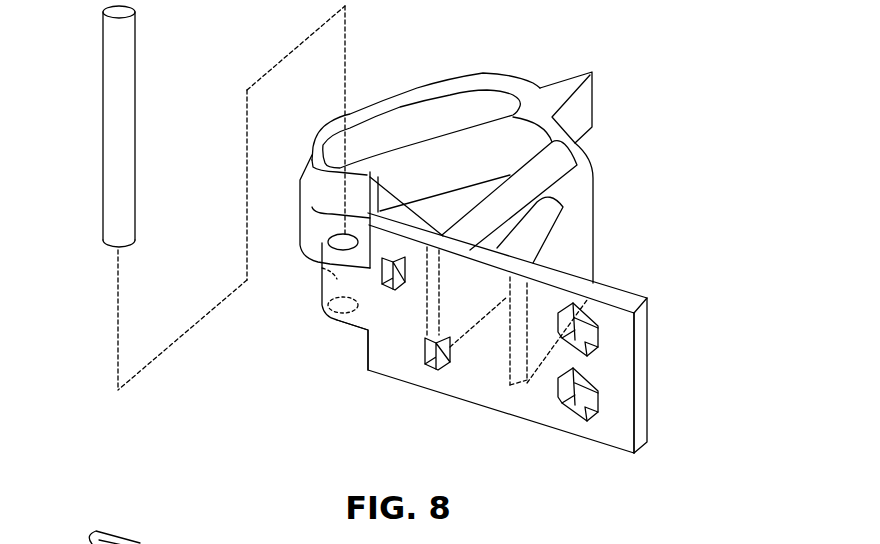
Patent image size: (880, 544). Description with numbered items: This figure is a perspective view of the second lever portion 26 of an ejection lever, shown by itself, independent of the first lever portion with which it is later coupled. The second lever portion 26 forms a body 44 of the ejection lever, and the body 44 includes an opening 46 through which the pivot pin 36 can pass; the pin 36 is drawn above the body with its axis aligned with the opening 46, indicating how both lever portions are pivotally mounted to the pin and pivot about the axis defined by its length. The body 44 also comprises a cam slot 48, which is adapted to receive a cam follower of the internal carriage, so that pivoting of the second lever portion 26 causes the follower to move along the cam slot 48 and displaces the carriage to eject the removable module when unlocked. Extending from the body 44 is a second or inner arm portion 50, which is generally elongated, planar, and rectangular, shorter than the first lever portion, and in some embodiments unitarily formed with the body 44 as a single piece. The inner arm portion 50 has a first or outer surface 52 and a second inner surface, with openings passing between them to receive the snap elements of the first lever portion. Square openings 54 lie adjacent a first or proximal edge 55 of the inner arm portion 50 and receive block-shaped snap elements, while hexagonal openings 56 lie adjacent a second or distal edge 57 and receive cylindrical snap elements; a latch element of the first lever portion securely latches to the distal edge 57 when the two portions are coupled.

The second lever portion 26 is at (692, 81).
The pivot pin 36 is at (118, 108).
The body 44 is at (458, 215).
The opening 46 is at (345, 240).
The cam slot 48 is at (455, 113).
The inner arm portion 50 is at (483, 343).
The outer surface 52 is at (500, 397).
The square openings 54 is at (393, 282).
The proximal edge 55 is at (366, 345).
The hexagonal openings 56 is at (570, 353).
The distal edge 57 is at (640, 328).